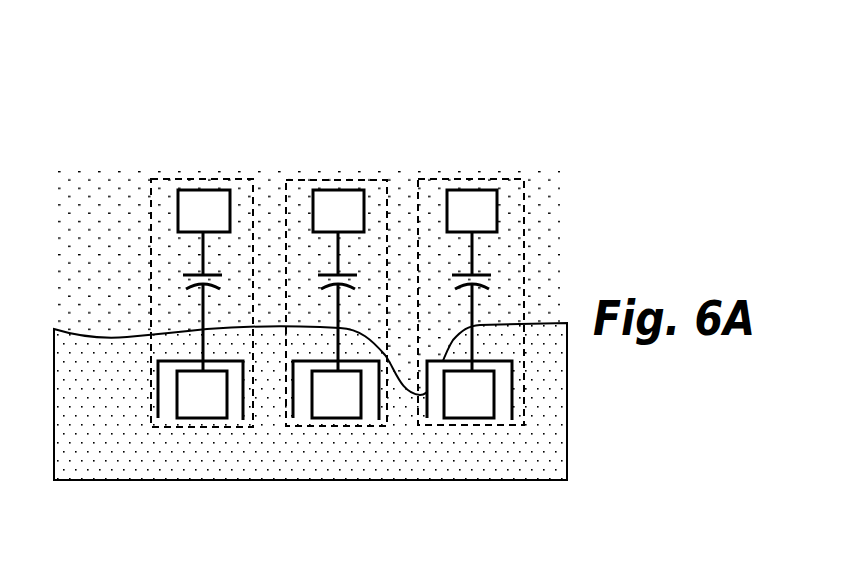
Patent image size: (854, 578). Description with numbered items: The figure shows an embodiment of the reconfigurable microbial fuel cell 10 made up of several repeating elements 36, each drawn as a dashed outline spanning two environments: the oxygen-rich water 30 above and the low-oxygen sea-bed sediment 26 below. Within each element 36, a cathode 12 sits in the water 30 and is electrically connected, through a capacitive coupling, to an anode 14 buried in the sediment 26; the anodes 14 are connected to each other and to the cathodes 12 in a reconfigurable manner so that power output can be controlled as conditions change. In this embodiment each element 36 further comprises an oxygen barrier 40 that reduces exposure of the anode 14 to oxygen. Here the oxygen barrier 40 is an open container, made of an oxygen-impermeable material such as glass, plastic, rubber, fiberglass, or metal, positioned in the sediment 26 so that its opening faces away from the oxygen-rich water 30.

The reconfigurable microbial fuel cell 10 is at (276, 77).
The cathode 12 is at (219, 225).
The anode 14 is at (217, 407).
The sea-bed sediment 26 is at (113, 412).
The water 30 is at (115, 278).
The element 36 is at (468, 176).
The oxygen barrier 40 is at (159, 418).